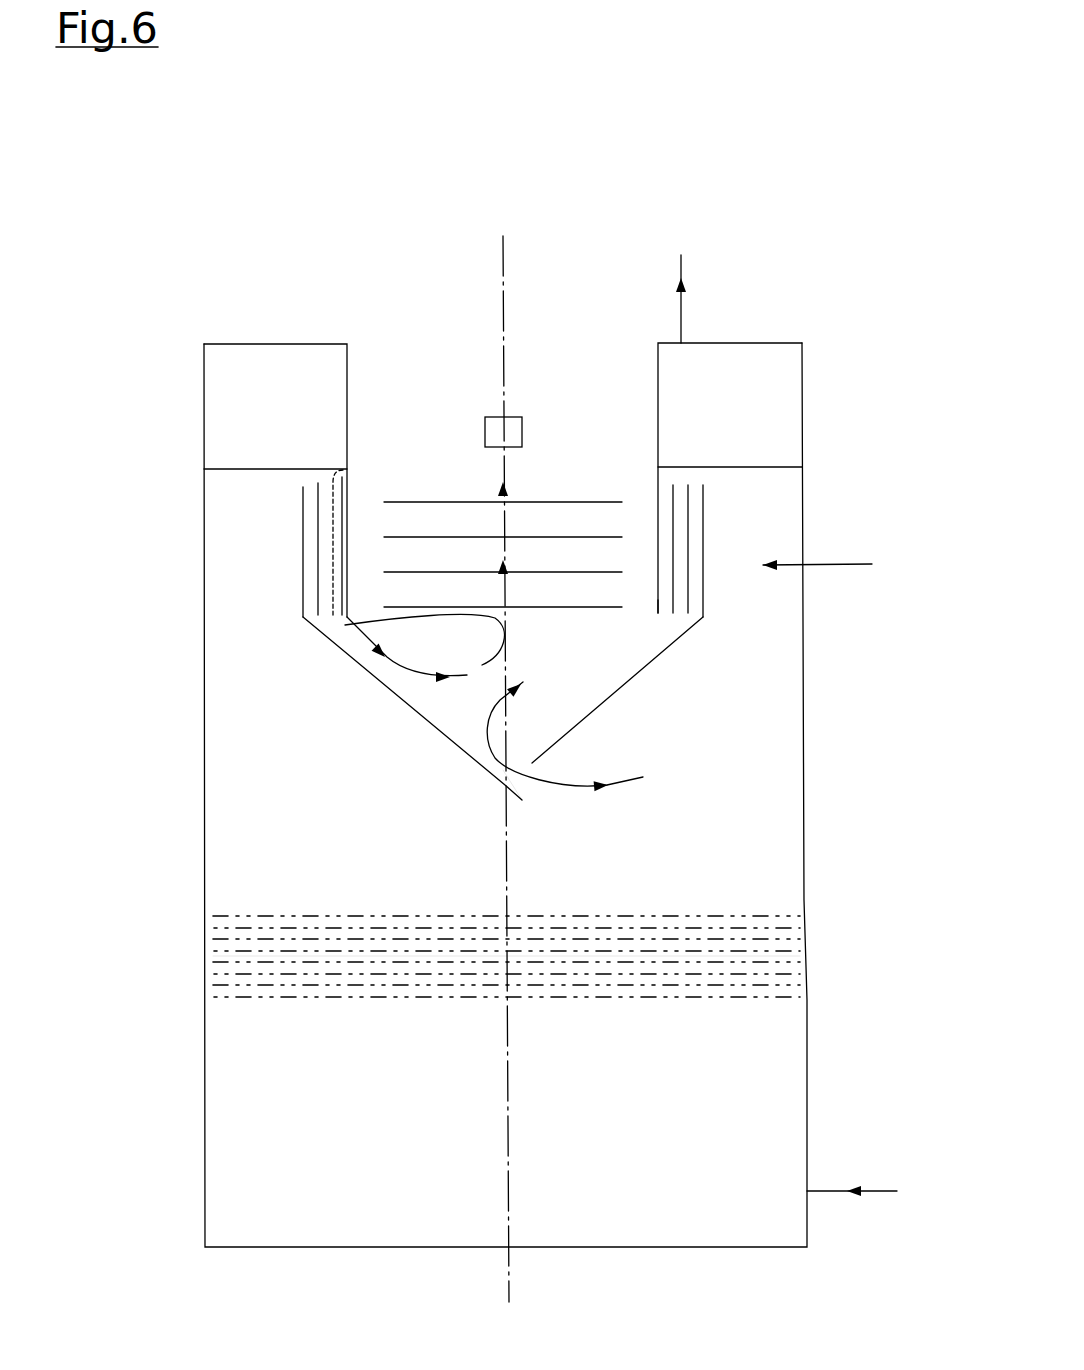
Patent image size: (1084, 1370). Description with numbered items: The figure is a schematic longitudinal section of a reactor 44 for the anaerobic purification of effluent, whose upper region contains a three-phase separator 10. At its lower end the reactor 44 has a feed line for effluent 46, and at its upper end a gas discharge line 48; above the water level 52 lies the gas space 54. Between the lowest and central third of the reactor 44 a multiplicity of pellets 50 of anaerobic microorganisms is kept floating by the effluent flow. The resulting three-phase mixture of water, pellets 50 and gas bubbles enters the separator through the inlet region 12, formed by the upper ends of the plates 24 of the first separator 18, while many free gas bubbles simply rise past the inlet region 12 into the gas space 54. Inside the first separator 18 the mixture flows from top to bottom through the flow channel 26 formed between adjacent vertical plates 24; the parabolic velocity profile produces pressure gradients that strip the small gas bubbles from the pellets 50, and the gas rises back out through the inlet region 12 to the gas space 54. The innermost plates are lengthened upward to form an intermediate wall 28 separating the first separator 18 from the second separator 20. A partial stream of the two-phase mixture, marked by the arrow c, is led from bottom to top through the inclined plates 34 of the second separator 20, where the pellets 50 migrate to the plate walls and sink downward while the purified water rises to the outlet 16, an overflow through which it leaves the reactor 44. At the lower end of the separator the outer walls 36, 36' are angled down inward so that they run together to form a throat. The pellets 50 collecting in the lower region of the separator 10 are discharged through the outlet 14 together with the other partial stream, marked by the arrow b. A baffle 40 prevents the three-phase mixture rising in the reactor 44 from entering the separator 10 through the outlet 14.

The three-phase separator 10 is at (849, 558).
The inlet region 12 is at (677, 478).
The outlet for a fraction rich in solids 14 is at (505, 774).
The outlet for purified water 16 is at (493, 423).
The first separator 18 is at (307, 470).
The second separator 20 is at (573, 490).
The plates 24 is at (689, 523).
The flow channel 26 is at (665, 605).
The intermediate wall 28 is at (660, 413).
The plates 34 is at (423, 572).
The outer wall 36 is at (292, 717).
The outer wall 36' is at (738, 690).
The baffle 40 is at (503, 785).
The reactor 44 is at (806, 972).
The feed line for effluent 46 is at (827, 1190).
The gas discharge line 48 is at (683, 327).
The pellets 50 is at (247, 947).
The water level 52 is at (243, 469).
The gas space 54 is at (238, 395).
The arrow c) c is at (345, 625).
The arrow b) b is at (560, 782).